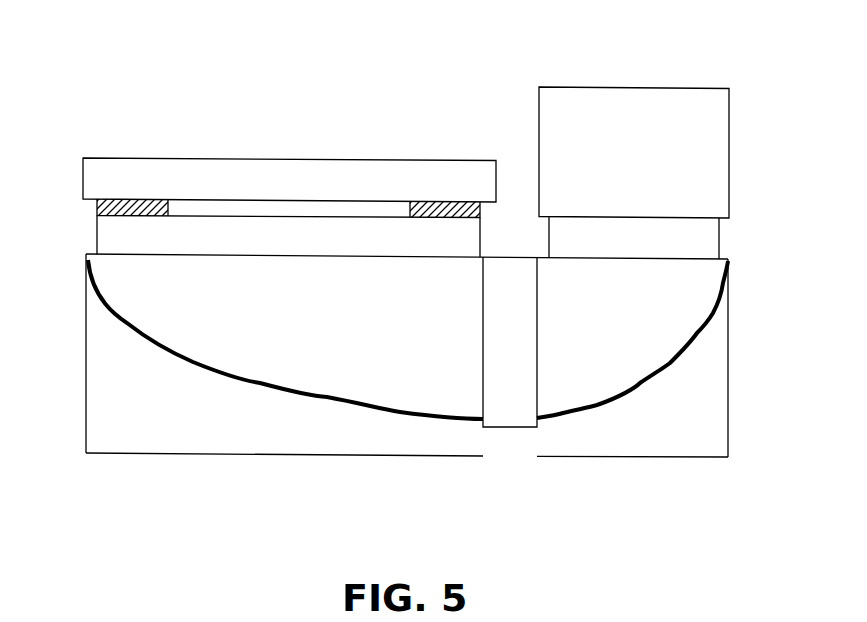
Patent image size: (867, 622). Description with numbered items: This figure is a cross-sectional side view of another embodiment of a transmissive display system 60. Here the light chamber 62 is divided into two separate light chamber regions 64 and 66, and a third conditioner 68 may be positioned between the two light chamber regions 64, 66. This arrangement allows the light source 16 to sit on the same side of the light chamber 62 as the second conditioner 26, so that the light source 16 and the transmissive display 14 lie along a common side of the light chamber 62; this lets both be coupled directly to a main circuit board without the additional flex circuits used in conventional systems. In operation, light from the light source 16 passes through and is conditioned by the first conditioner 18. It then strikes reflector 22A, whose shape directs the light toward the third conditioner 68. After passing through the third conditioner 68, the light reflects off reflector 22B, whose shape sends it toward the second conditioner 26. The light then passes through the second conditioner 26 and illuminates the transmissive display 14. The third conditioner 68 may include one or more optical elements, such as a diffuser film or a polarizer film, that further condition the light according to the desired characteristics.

The transmissive display system 60 is at (572, 55).
The transmissive display 14 is at (83, 172).
The second conditioner 26 is at (97, 223).
The light source 16 is at (729, 133).
The first conditioner 18 is at (719, 232).
The light chamber 62 is at (305, 456).
The third conditioner 68 is at (503, 428).
The light chamber region 64 is at (728, 333).
The light chamber region 66 is at (86, 357).
The reflector 22A is at (645, 384).
The reflector 22B is at (222, 372).